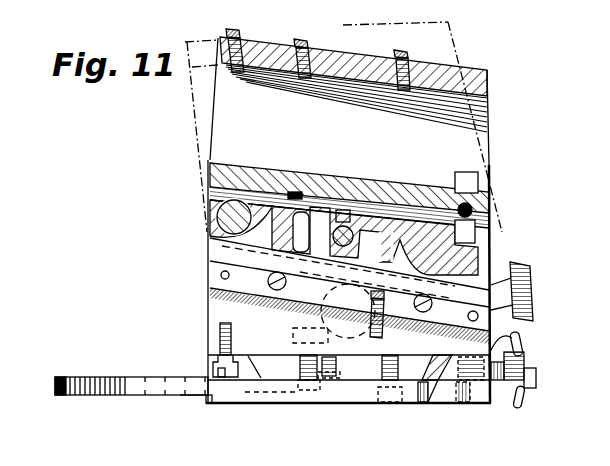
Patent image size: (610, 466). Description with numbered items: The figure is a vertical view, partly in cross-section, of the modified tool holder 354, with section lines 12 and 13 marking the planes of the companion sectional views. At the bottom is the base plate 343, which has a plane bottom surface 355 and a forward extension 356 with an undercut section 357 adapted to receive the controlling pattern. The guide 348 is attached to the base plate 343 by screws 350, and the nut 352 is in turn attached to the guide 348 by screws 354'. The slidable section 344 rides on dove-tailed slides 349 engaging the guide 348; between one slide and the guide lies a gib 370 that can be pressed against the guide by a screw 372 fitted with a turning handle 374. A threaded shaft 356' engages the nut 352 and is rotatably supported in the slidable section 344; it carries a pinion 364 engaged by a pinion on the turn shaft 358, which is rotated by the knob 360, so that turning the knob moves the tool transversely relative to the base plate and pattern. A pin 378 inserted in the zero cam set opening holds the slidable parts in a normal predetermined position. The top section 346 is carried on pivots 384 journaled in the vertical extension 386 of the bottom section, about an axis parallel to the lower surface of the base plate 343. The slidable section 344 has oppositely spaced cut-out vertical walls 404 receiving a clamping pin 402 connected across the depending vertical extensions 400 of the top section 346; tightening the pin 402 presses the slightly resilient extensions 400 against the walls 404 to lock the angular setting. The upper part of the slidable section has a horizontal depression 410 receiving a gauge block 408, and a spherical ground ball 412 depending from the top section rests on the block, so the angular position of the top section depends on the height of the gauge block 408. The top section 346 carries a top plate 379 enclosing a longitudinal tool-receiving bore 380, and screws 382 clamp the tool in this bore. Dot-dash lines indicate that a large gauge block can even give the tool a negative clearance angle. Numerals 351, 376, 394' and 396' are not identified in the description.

The section line 12- 12 is at (135, 185).
The section line 13- 13 is at (343, 17).
The base plate 343 is at (254, 395).
The slidable section 344 is at (212, 298).
The top section 346 is at (210, 172).
The guide 348 is at (278, 345).
The dove-tailed slides 349 is at (208, 362).
The screws 350 is at (320, 392).
The stud 351 is at (219, 338).
The nut 352 is at (310, 300).
The tool holder 354 is at (149, 312).
The screws 354' is at (351, 366).
The plane bottom surface 355 is at (408, 407).
The forward extension 356 is at (131, 372).
The threaded shaft 356' is at (337, 306).
The undercut section 357 is at (206, 400).
The turn shaft 358 is at (520, 265).
The knob 360 is at (533, 300).
The pinion 364 is at (385, 344).
The gib 370 is at (428, 402).
The screw 372 is at (521, 343).
The turning handle 374 is at (524, 366).
The base corner 376 is at (493, 403).
The pin 378 is at (537, 380).
The top plate 379 is at (488, 82).
The tool-receiving bore 380 is at (458, 110).
The screws 382 is at (410, 53).
The pivots 384 is at (211, 208).
The vertical extension 386 is at (213, 222).
The cover plate 394' is at (327, 264).
The screw 396' is at (335, 298).
The depending vertical extensions 400 is at (350, 196).
The clamping pin 402 is at (302, 215).
The cut-out vertical walls 404 is at (367, 226).
The gauge block 408 is at (470, 226).
The horizontal depression 410 is at (480, 250).
The spherical ground ball 412 is at (482, 192).